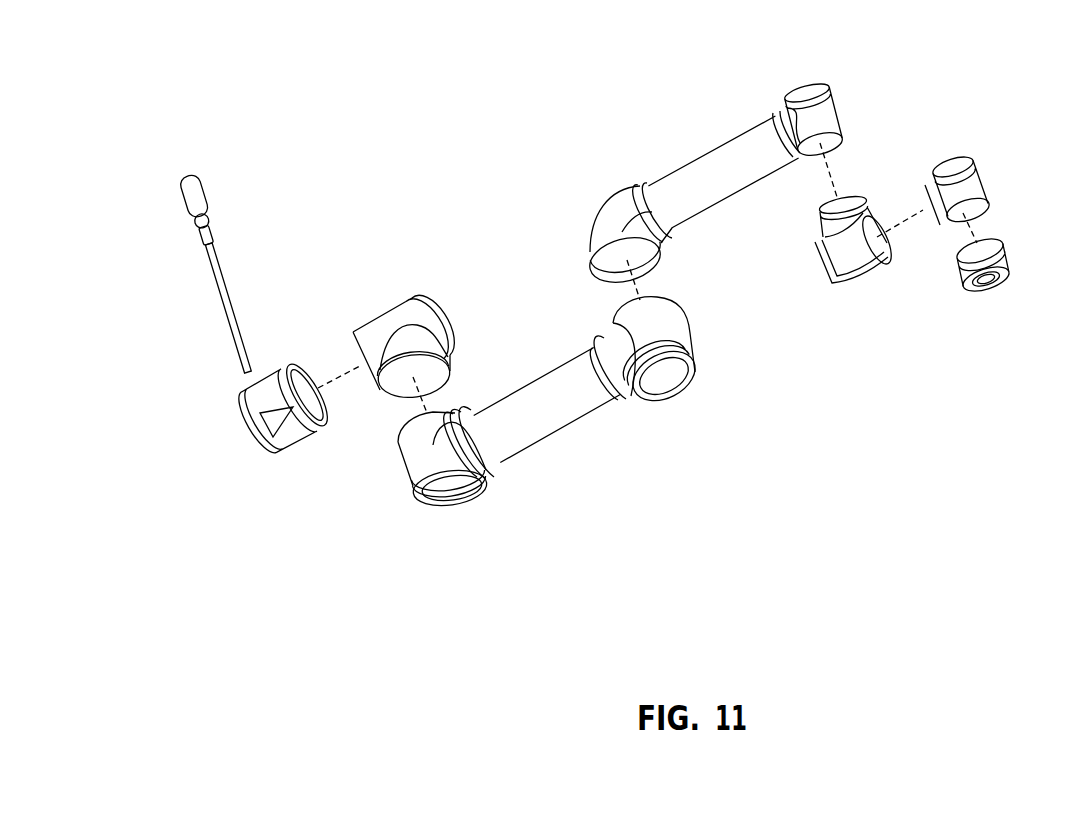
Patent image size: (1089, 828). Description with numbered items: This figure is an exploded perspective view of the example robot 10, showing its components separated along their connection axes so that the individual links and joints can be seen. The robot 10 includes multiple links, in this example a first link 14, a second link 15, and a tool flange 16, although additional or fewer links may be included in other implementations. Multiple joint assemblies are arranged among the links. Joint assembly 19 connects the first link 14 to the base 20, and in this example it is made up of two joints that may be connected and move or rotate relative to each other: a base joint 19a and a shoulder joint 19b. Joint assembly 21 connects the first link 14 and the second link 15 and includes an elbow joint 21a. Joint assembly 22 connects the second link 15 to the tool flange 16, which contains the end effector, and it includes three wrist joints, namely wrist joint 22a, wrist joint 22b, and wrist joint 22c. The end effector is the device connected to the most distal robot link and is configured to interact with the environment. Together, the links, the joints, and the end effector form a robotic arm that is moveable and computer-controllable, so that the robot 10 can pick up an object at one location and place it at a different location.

The robot 10 is at (523, 143).
The first link 14 is at (547, 380).
The second link 15 is at (707, 149).
The tool flange 16 is at (1003, 287).
The joint assembly 19 is at (378, 434).
The base joint 19a is at (373, 390).
The shoulder joint 19b is at (433, 513).
The base 20 is at (247, 398).
The joint assembly 21 is at (600, 458).
The elbow joint 21a is at (633, 407).
The joint assembly 22 is at (902, 166).
The wrist joint 22a is at (840, 113).
The wrist joint 22b is at (867, 202).
The wrist joint 22c is at (987, 192).